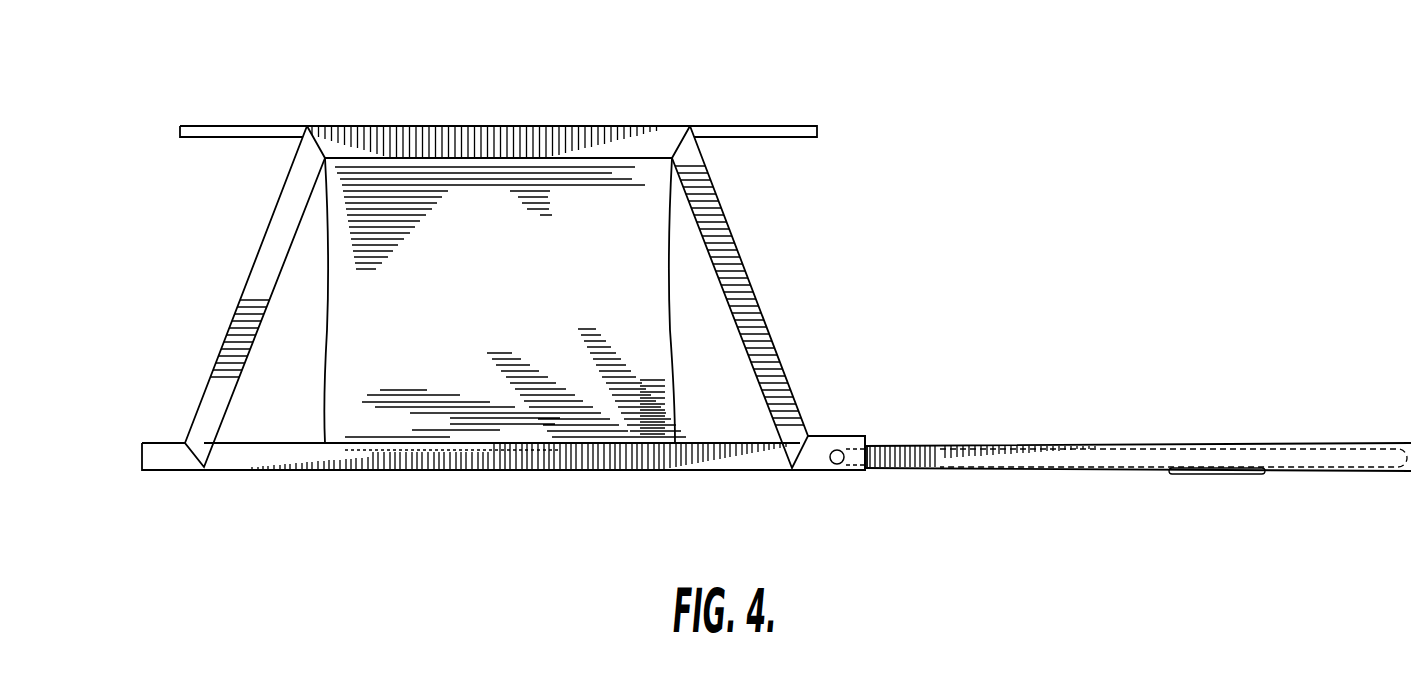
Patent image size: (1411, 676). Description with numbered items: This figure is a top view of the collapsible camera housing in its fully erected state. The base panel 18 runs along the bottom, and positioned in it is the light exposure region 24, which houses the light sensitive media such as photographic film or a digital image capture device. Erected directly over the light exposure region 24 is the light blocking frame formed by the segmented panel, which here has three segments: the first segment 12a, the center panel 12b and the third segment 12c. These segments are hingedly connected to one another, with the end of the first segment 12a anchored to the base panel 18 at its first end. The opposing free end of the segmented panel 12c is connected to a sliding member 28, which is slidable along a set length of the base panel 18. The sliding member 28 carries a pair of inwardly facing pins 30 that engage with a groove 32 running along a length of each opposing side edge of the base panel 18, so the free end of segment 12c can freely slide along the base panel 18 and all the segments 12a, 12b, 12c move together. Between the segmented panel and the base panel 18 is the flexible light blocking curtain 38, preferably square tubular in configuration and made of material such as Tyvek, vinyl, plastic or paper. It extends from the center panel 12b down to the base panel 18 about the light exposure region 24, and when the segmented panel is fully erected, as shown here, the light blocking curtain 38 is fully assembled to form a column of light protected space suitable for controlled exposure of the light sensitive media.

The first segment 12a is at (254, 277).
The center panel 12b is at (495, 130).
The third segment 12c is at (737, 265).
The base panel 18 is at (253, 463).
The light exposure region 24 is at (375, 463).
The sliding member 28 is at (812, 467).
The pins 30 is at (840, 464).
The groove 32 is at (1056, 463).
The light blocking curtain 38 is at (497, 383).